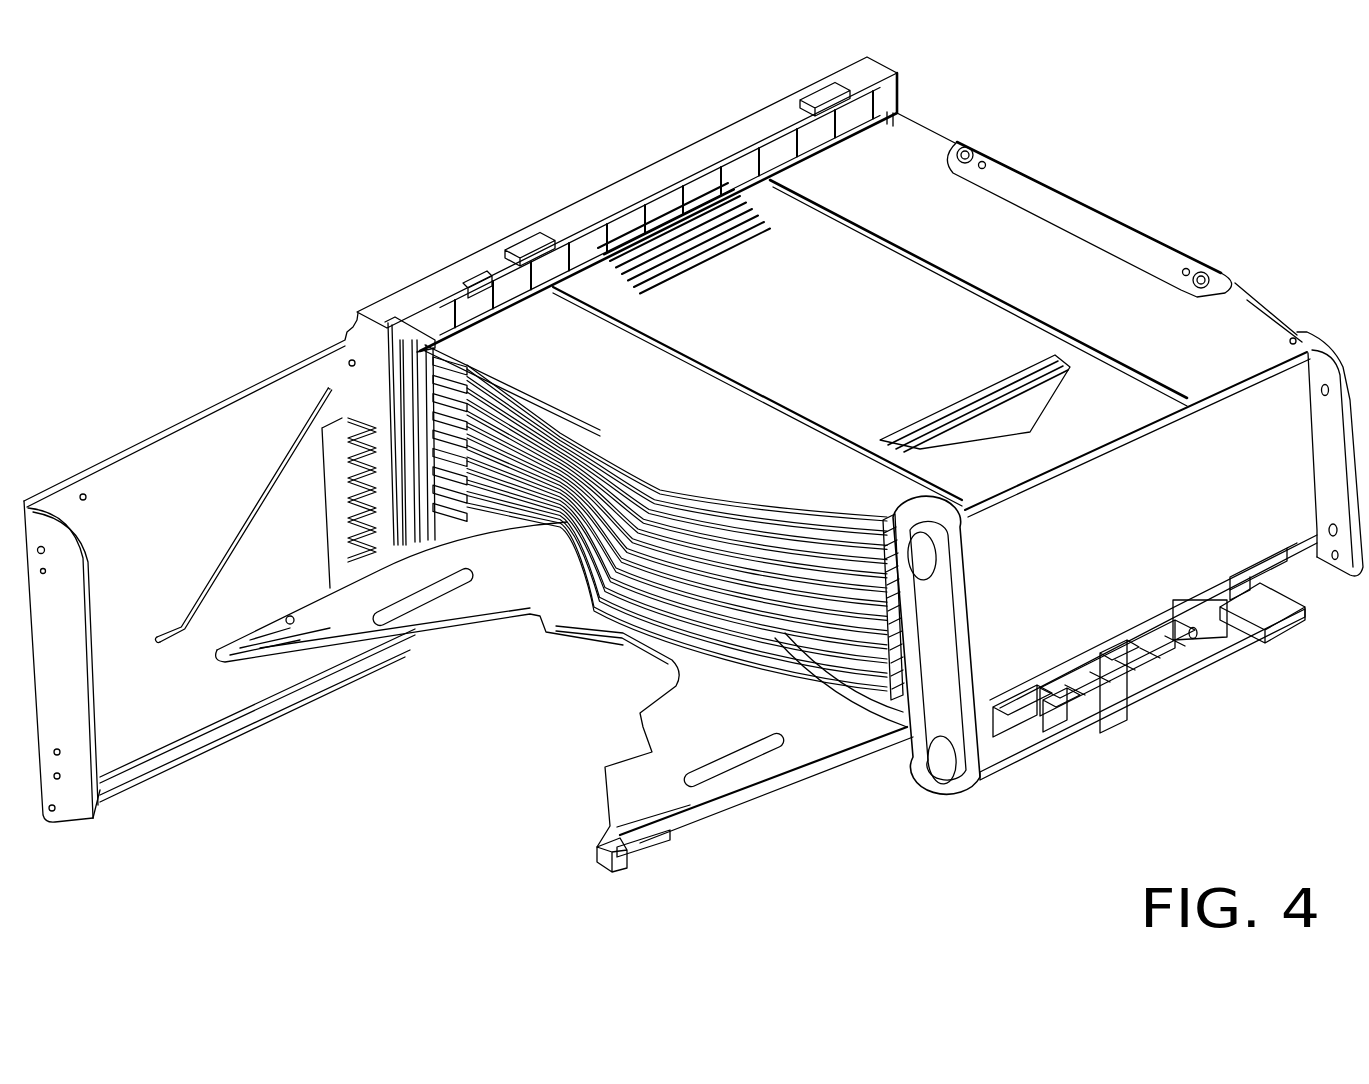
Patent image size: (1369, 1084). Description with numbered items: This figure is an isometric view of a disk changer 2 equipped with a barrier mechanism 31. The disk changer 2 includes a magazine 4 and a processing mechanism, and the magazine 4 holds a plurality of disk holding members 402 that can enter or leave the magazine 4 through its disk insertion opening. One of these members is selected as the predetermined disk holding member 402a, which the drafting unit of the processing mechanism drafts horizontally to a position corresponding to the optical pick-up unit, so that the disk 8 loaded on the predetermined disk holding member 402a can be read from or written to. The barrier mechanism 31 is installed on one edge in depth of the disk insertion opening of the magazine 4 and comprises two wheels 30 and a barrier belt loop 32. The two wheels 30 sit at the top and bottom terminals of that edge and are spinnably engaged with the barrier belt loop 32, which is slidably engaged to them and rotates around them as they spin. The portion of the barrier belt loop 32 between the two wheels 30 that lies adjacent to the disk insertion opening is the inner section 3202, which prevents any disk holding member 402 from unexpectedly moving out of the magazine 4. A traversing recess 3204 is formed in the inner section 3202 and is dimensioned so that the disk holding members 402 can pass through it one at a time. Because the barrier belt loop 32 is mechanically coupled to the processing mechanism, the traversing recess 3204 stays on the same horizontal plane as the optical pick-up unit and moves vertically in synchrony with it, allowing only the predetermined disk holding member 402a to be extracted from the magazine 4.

The disk changer 2 is at (1178, 196).
The magazine 4 is at (915, 326).
The disk 8 is at (672, 527).
The wheels 30 is at (927, 556).
The barrier mechanism 31 is at (995, 630).
The barrier belt loop 32 is at (975, 752).
The disk holding members 402 is at (498, 463).
The predetermined disk holding member 402a is at (617, 785).
The inner section 3202 is at (880, 647).
The traversing recess 3204 is at (907, 740).